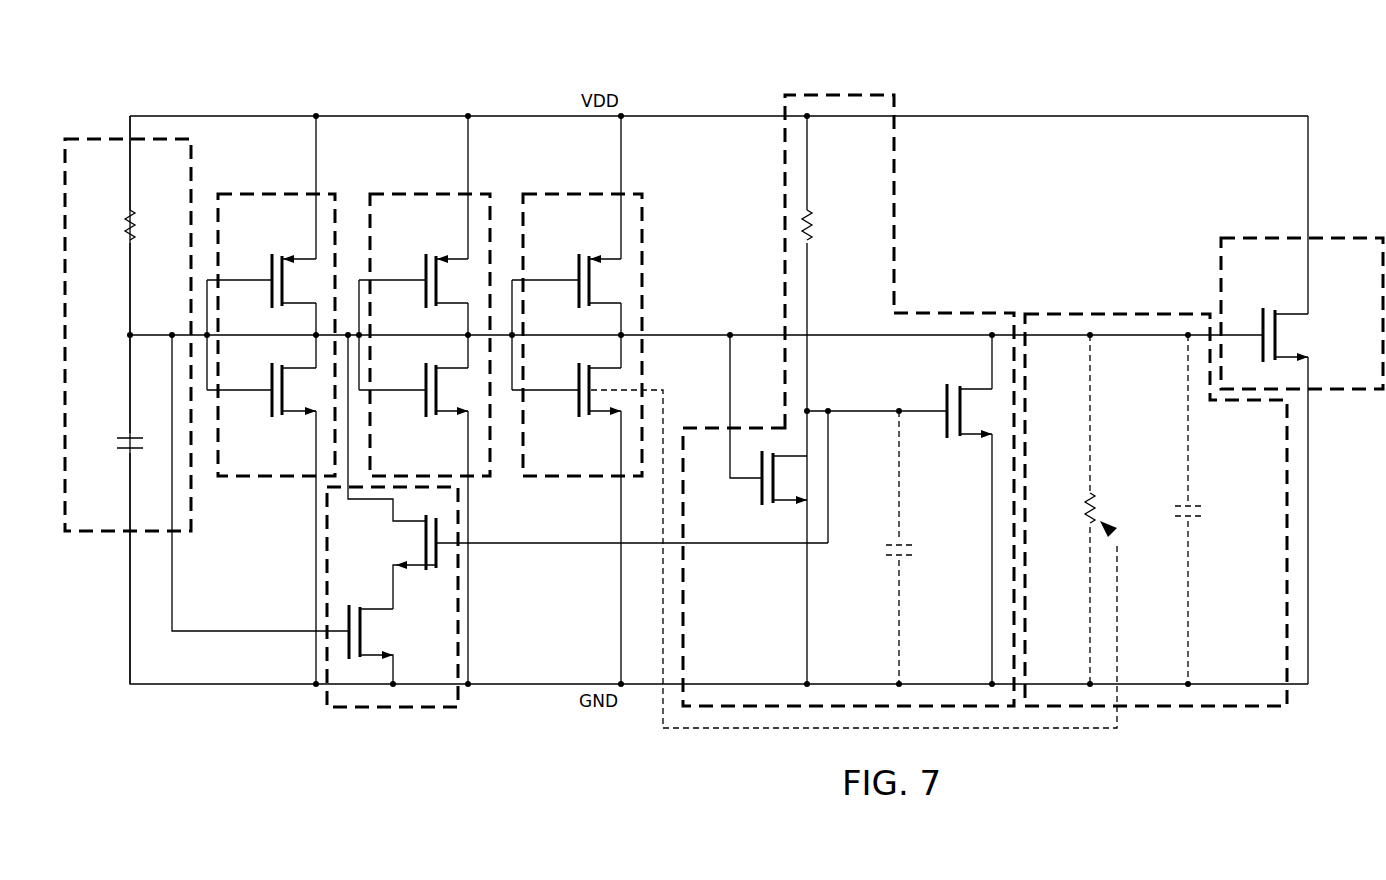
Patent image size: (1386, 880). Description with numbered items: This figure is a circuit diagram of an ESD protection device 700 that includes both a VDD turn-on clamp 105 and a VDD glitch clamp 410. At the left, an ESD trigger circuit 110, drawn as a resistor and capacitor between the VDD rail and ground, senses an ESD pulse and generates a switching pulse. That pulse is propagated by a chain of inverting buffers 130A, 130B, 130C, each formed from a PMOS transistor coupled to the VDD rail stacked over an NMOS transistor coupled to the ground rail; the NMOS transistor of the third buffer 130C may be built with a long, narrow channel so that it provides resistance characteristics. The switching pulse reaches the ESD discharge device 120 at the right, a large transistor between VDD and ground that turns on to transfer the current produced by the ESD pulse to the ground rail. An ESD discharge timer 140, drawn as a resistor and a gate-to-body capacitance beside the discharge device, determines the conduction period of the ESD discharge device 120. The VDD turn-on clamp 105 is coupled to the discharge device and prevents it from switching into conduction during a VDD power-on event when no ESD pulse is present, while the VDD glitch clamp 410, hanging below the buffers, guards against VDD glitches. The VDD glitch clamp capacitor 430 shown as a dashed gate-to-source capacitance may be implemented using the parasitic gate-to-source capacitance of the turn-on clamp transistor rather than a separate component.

The ESD protection device 700 is at (948, 95).
The ESD trigger circuit 110 is at (102, 535).
The first inverting buffer 130A is at (278, 193).
The second inverting buffer 130B is at (430, 193).
The third inverting buffer 130C is at (557, 193).
The VDD glitch clamp 410 is at (380, 710).
The VDD turn-on clamp 105 is at (953, 313).
The VDD glitch clamp capacitor 430 is at (888, 548).
The ESD discharge timer 140 is at (1132, 313).
The ESD discharge device 120 is at (1330, 237).